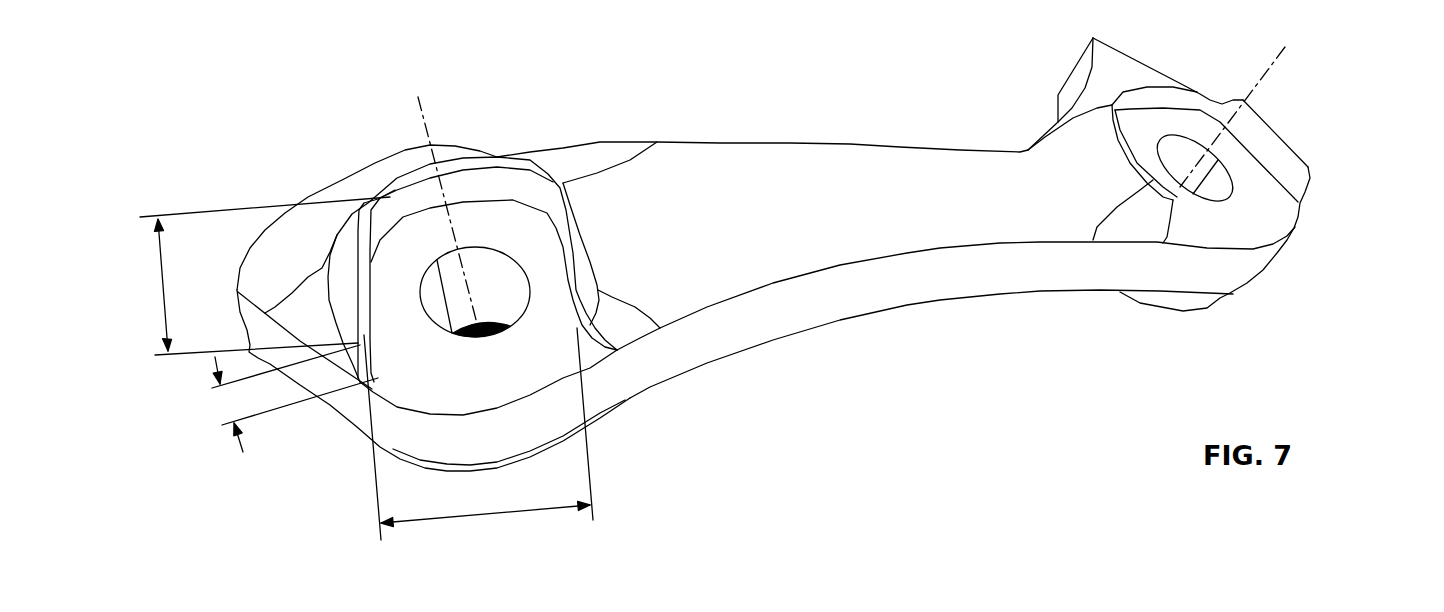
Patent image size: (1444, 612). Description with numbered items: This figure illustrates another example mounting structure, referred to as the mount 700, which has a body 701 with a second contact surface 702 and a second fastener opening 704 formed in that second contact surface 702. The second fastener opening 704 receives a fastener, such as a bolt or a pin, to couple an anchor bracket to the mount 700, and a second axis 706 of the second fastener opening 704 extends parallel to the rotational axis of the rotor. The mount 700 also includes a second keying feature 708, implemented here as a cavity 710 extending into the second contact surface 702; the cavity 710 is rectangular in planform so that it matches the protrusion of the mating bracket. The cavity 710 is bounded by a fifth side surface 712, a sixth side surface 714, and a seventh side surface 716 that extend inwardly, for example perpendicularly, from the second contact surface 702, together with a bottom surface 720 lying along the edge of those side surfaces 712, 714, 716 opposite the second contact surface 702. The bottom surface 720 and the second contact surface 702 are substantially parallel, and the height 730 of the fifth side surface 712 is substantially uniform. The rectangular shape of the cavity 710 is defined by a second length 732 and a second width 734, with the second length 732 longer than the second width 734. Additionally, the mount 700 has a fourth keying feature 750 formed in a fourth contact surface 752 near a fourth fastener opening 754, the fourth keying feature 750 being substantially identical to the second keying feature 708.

The mount 700 is at (783, 143).
The body 701 is at (895, 155).
The second contact surface 702 is at (590, 263).
The second fastener opening 704 is at (503, 278).
The second axis 706 is at (427, 122).
The second keying feature 708 is at (482, 383).
The cavity 710 is at (432, 390).
The fifth side surface 712 is at (372, 330).
The sixth side surface 714 is at (501, 182).
The seventh side surface 716 is at (577, 312).
The bottom surface 720 is at (388, 245).
The height 730 is at (243, 449).
The second length 732 is at (165, 325).
The second width 734 is at (458, 517).
The fourth keying feature 750 is at (1327, 120).
The fourth contact surface 752 is at (1303, 149).
The fourth fastener opening 754 is at (1213, 190).